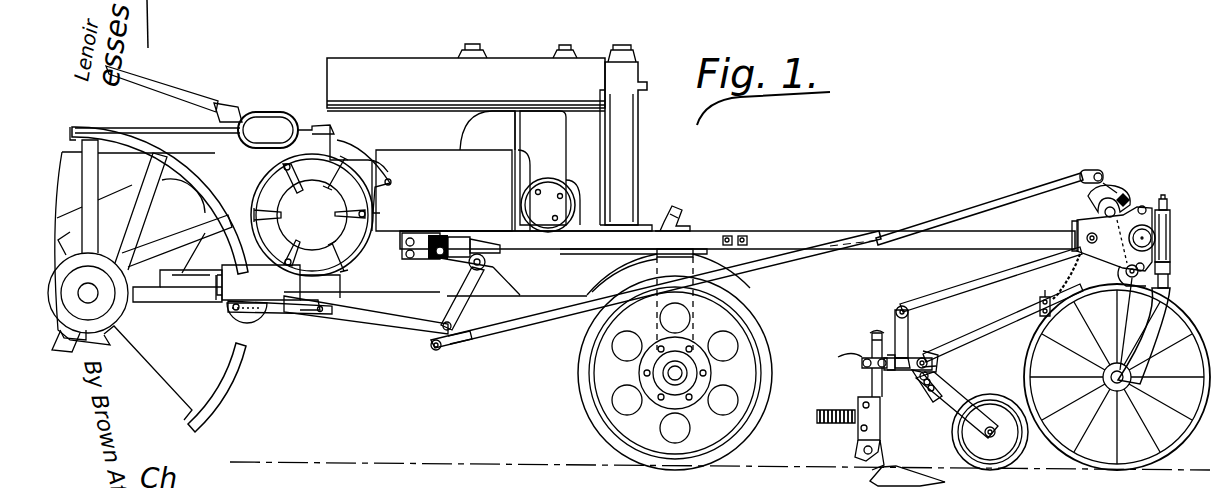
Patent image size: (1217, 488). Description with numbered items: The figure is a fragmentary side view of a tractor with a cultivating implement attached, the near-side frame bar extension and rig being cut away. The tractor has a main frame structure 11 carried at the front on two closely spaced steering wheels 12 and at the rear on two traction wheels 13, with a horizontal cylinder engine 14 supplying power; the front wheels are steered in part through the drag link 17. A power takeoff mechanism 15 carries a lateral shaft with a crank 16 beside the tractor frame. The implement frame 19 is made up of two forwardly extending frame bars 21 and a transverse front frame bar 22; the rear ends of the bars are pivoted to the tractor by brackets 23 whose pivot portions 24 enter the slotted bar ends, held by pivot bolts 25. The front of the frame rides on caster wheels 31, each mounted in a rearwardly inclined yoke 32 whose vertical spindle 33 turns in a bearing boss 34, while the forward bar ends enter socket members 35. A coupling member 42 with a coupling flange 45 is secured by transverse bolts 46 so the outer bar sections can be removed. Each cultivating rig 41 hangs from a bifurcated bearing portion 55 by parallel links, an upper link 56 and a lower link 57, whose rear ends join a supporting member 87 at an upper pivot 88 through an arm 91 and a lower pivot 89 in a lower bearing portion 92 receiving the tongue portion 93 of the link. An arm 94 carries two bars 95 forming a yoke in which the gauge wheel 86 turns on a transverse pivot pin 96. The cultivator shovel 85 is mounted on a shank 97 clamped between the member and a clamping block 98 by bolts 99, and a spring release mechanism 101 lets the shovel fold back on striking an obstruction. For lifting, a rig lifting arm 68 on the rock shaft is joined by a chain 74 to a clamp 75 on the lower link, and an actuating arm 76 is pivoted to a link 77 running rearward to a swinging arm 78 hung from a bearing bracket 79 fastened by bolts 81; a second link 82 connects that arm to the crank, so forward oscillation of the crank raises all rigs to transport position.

The main frame structure 11 is at (543, 298).
The steering wheels 12 is at (580, 386).
The traction wheels 13 is at (202, 424).
The horizontal cylinder engine 14 is at (402, 163).
The power takeoff mechanism 15 is at (260, 337).
The crank 16 is at (250, 303).
The drag link 17 is at (333, 315).
The implement frame 19 is at (790, 224).
The forwardly extending frame bars 21 is at (834, 231).
The transverse front frame bar 22 is at (1156, 238).
The brackets 23 is at (406, 233).
The pivot portions 24 is at (452, 238).
The pivot bolts 25 is at (441, 238).
The caster wheels 31 is at (1198, 432).
The rearwardly inclined yoke 32 is at (1132, 350).
The vertical spindle 33 is at (1165, 200).
The bearing sleeve or boss 34 is at (1171, 262).
The sleeve-like socket members 35 is at (1072, 230).
The cultivating rig 41 is at (848, 377).
The sleeve-like coupling member 42 is at (1166, 232).
The coupling flange 45 is at (1128, 207).
The transverse bolts 46 is at (1145, 200).
The bifurcated bearing portion 55 is at (1132, 280).
The upper link 56 is at (947, 282).
The lower link 57 is at (980, 332).
The rig lifting arm 68 is at (1090, 210).
The chain 74 is at (1072, 263).
The clamp or bracket 75 is at (1036, 303).
The actuating arm 76 is at (1106, 186).
The link 77 is at (963, 208).
The swinging arm 78 is at (460, 321).
The bearing bracket 79 is at (488, 220).
The bolts or screws 81 is at (492, 233).
The second link 82 is at (368, 332).
The cultivator shovel 85 is at (903, 474).
The gauge wheel 86 is at (1006, 384).
The supporting member 87 is at (890, 372).
The upper pivot 88 is at (904, 305).
The lower pivot 89 is at (930, 352).
The arm 91 is at (908, 346).
The lower bearing portion 92 is at (935, 366).
The tongue portion 93 is at (938, 358).
The arm 94 is at (921, 392).
The bars 95 is at (957, 405).
The transverse pivot pin 96 is at (990, 430).
The shank 97 is at (870, 378).
The clamping block 98 is at (893, 345).
The bolts 99 is at (862, 356).
The spring release mechanism 101 is at (851, 427).